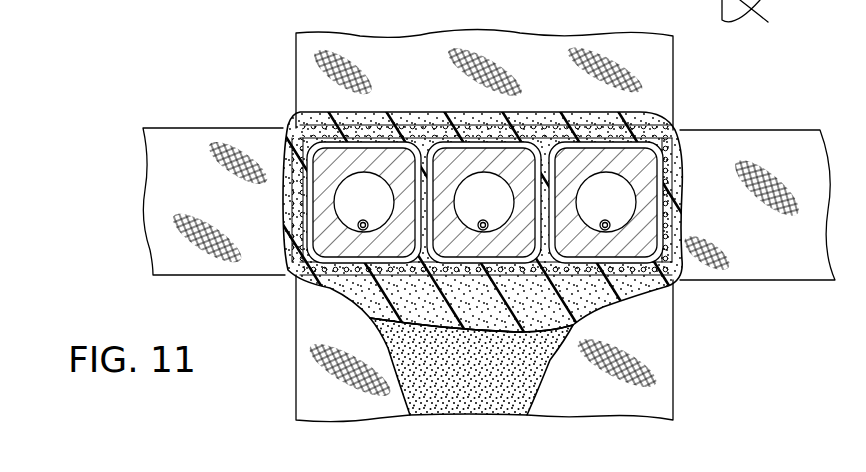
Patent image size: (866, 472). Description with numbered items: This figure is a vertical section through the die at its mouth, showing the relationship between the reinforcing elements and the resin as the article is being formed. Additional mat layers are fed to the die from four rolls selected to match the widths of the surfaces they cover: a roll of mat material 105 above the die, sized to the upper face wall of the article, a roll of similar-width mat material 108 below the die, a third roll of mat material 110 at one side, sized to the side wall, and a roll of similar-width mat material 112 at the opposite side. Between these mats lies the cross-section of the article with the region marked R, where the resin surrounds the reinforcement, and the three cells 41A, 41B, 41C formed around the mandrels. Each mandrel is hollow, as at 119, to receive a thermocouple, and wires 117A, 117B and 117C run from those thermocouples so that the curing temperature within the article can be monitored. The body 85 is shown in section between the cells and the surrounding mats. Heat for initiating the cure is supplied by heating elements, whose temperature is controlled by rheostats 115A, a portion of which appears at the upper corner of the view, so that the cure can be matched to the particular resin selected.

The roll of mat material 105 is at (417, 42).
The roll of mat material 108 is at (662, 336).
The roll of mat material 110 is at (180, 128).
The roll of mat material 112 is at (788, 134).
The rheostat 115A is at (768, 19).
The foamed insulating body 85 is at (672, 141).
The first cell wall 41A is at (368, 156).
The second cell wall 41B is at (478, 152).
The third cell wall 41C is at (592, 154).
The wire 117A is at (362, 220).
The wire 117B is at (482, 220).
The wire 117C is at (604, 220).
The hollow 119 is at (667, 212).
The resin region R is at (555, 348).